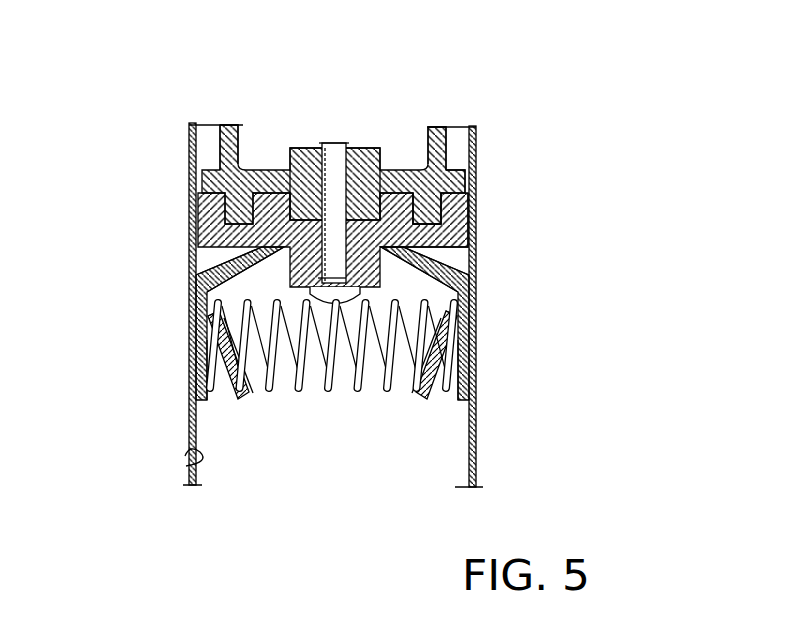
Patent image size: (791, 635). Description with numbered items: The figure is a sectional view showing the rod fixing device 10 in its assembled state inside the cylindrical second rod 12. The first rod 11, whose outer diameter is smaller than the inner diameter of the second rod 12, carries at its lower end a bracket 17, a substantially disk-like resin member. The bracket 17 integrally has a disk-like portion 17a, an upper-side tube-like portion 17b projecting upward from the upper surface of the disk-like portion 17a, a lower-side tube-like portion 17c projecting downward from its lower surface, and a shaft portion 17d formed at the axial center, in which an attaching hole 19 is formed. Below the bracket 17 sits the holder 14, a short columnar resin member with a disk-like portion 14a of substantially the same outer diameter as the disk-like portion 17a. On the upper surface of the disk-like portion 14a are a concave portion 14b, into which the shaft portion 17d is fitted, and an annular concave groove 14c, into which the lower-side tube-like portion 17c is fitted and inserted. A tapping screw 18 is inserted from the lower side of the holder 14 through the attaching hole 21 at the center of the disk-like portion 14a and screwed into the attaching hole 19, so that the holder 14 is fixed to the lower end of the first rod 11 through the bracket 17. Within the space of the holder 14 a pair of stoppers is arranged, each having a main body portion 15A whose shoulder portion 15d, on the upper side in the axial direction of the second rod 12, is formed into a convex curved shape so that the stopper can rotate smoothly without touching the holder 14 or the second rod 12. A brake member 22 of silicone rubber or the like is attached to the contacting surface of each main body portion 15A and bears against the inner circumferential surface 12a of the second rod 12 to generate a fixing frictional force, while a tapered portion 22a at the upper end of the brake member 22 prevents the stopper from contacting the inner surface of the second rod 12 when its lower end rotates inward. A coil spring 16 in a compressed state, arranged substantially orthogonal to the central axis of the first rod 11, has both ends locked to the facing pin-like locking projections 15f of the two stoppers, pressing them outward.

The rod fixing device 10 is at (520, 62).
The first rod 11 is at (227, 125).
The second rod 12 is at (188, 123).
The inner circumferential surface 12a is at (186, 466).
The holder 14 is at (285, 158).
The disk-like portion 14a is at (199, 218).
The concave portion 14b is at (290, 148).
The annular concave groove 14c is at (203, 180).
The main body portion 15A is at (200, 312).
The shoulder portion 15d is at (197, 280).
The locking projection 15f is at (205, 340).
The coil spring 16 is at (337, 392).
The bracket 17 is at (512, 181).
The disk-like portion 17a is at (468, 182).
The upper-side tube-like portion 17b is at (447, 163).
The lower-side tube-like portion 17c is at (495, 219).
The shaft portion 17d is at (432, 160).
The tapping screw 18 is at (348, 176).
The attaching hole 19 is at (324, 146).
The attaching hole 21 is at (320, 275).
The brake member 22 is at (212, 386).
The tapered portion 22a is at (209, 347).